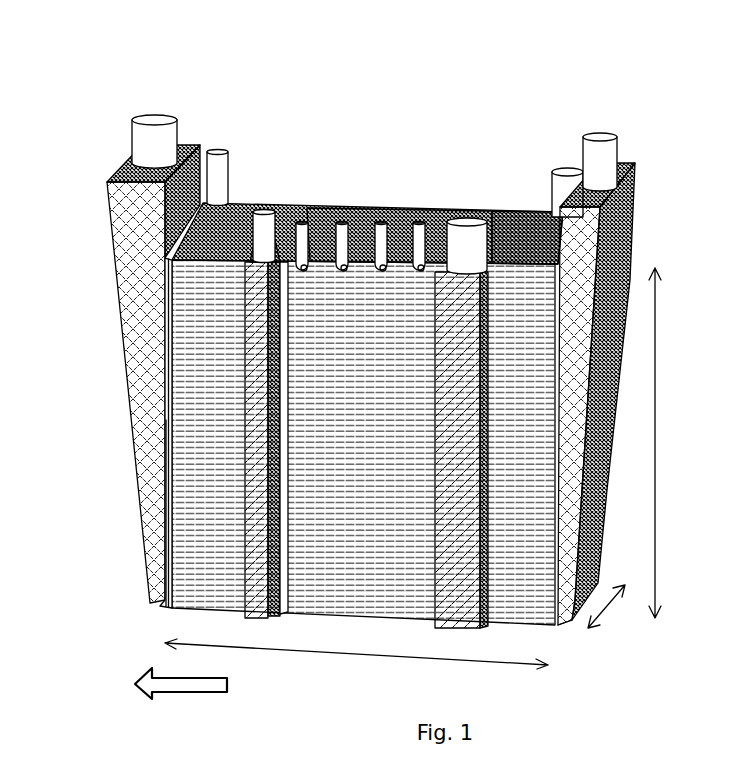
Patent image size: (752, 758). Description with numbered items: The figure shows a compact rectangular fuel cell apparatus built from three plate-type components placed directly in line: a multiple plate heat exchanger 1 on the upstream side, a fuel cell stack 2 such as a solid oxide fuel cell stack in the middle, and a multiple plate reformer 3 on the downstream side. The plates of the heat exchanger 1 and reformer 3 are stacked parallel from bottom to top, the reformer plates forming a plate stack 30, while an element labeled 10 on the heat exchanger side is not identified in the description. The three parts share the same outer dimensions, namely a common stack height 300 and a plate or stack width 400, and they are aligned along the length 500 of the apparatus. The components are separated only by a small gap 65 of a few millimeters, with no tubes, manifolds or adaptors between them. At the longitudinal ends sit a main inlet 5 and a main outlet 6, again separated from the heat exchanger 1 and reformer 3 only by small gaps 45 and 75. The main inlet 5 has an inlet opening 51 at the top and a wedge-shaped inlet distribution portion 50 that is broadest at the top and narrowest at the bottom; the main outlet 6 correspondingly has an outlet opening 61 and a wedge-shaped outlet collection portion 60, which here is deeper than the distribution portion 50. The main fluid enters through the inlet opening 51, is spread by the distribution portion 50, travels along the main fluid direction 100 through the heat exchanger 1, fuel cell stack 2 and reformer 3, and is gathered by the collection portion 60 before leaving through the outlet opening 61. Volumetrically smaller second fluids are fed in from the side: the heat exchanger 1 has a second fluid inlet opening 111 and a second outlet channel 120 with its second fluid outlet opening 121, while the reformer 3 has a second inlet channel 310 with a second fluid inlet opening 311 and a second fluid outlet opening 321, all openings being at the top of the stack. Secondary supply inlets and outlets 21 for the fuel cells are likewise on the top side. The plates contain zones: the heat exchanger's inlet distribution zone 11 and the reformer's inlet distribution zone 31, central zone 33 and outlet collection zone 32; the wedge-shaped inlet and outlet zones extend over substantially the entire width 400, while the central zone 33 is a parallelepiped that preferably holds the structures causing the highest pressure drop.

The heat exchanger 1 is at (310, 489).
The fuel cell stack 2 is at (399, 184).
The reformer 3 is at (164, 630).
The main inlet 5 is at (635, 337).
The main outlet 6 is at (123, 311).
The upper cover portion 10 is at (512, 210).
The inlet distribution zone 11 is at (518, 230).
The secondary supply inlets and outlets 21 is at (345, 222).
The plate stack 30 is at (193, 385).
The inlet distribution zone 31 is at (290, 225).
The outlet collection zone 32 is at (243, 205).
The central zone 33 is at (280, 237).
The gap 45 is at (560, 630).
The wedge-shaped inlet distribution portion 50 is at (607, 387).
The inlet opening 51 is at (600, 140).
The wedge-shaped outlet collection portion 60 is at (127, 273).
The outlet opening 61 is at (156, 120).
The gap 65 is at (283, 563).
The gap 75 is at (160, 588).
The main fluid direction 100 is at (170, 694).
The second fluid inlet opening 111 is at (573, 163).
The second outlet channel 120 is at (458, 602).
The second fluid outlet opening 121 is at (470, 252).
The stack height 300 is at (660, 515).
The second inlet channel 310 is at (260, 322).
The second fluid inlet opening 311 is at (170, 273).
The second fluid outlet opening 321 is at (210, 197).
The plate width 400 is at (605, 607).
The length 500 is at (273, 650).